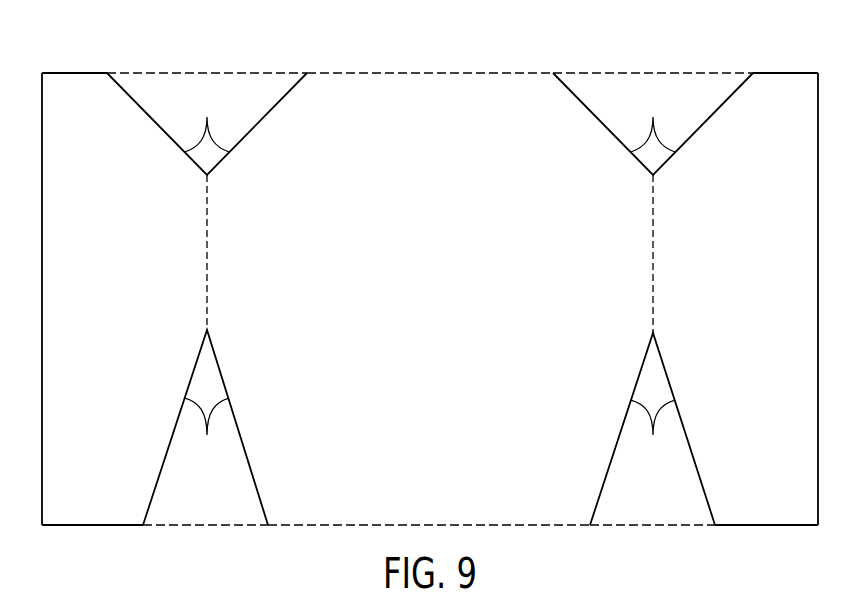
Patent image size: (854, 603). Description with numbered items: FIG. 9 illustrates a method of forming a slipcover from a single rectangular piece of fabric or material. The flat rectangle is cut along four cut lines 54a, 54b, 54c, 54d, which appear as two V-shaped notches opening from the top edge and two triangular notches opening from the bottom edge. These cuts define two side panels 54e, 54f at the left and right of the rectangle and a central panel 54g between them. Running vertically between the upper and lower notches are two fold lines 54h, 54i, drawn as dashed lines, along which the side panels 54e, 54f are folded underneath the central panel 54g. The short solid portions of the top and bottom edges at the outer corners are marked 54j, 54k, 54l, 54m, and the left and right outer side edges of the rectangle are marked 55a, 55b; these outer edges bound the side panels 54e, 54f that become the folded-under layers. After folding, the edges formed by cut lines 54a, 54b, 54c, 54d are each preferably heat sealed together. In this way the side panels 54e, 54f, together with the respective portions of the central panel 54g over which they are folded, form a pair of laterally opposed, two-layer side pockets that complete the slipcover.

The cut line 54a is at (207, 124).
The cut line 54b is at (653, 124).
The cut line 54c is at (205, 427).
The cut line 54d is at (652, 429).
The side panel 54e is at (126, 300).
The side panel 54f is at (763, 300).
The central panel 54g is at (442, 300).
The fold line 54h is at (208, 223).
The fold line 54i is at (652, 223).
The upper left tab edge 54j is at (73, 73).
The lower left tab edge 54k is at (68, 525).
The upper right tab edge 54l is at (790, 73).
The lower right tab edge 54m is at (788, 525).
The left side edge 55a is at (42, 300).
The right side edge 55b is at (818, 300).